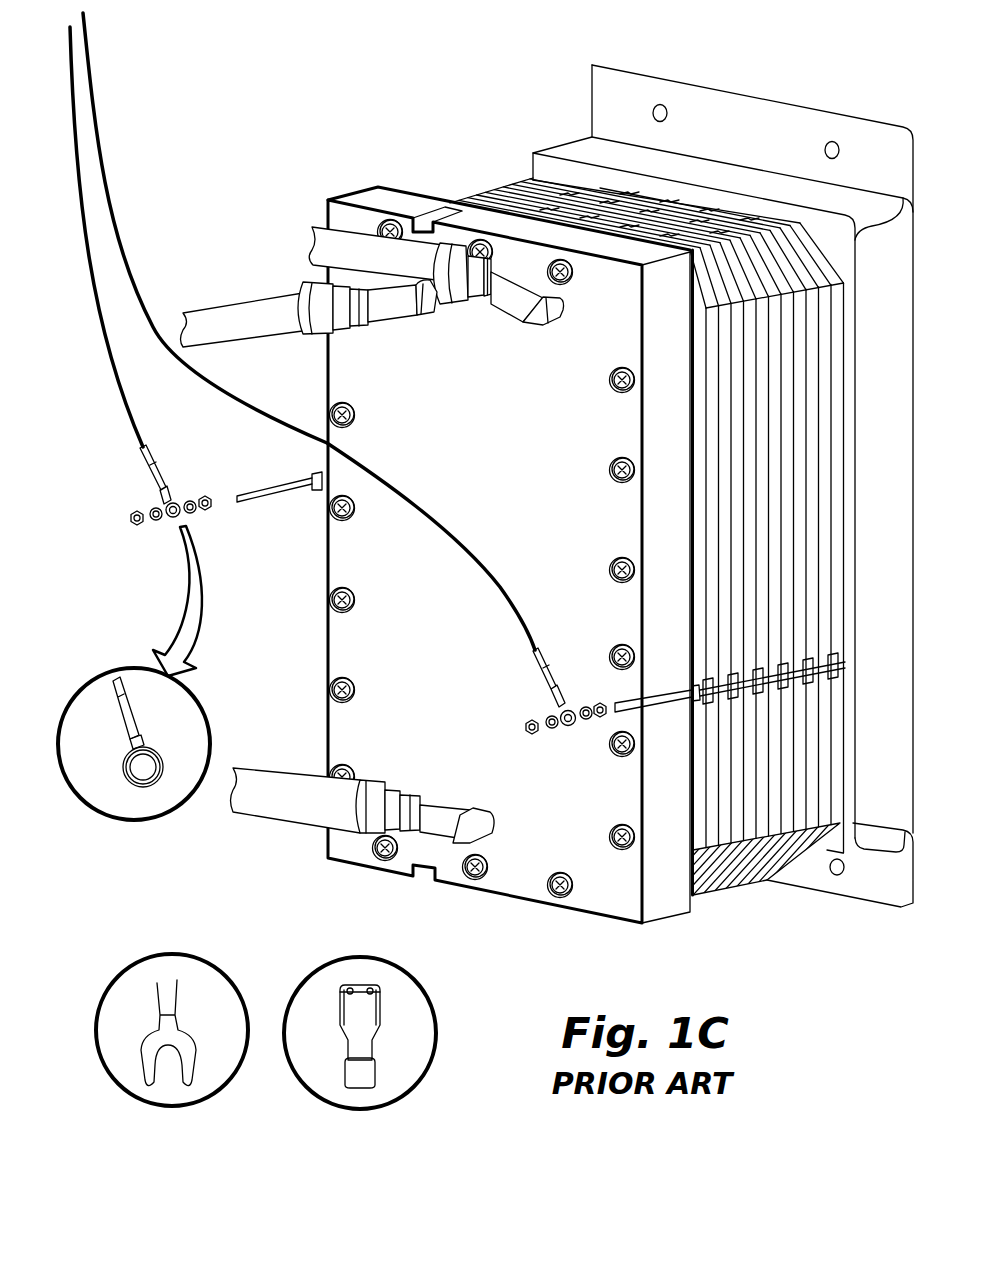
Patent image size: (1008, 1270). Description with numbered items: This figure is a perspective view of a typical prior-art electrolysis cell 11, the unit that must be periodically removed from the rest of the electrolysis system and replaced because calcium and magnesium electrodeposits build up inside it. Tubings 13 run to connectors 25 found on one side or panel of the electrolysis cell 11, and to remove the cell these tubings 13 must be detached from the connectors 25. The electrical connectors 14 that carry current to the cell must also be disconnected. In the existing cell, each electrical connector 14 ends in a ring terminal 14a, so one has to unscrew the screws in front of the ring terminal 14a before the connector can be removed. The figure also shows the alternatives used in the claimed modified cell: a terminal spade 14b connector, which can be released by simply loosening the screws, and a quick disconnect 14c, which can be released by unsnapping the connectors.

The electrolysis cell 11 is at (805, 405).
The tubings 13 is at (403, 247).
The connectors 25 is at (313, 290).
The electrical connectors 14 is at (150, 463).
The ring terminal connector 14a is at (134, 765).
The terminal spade connector 14b is at (172, 1055).
The quick disconnect connector 14c is at (360, 1056).